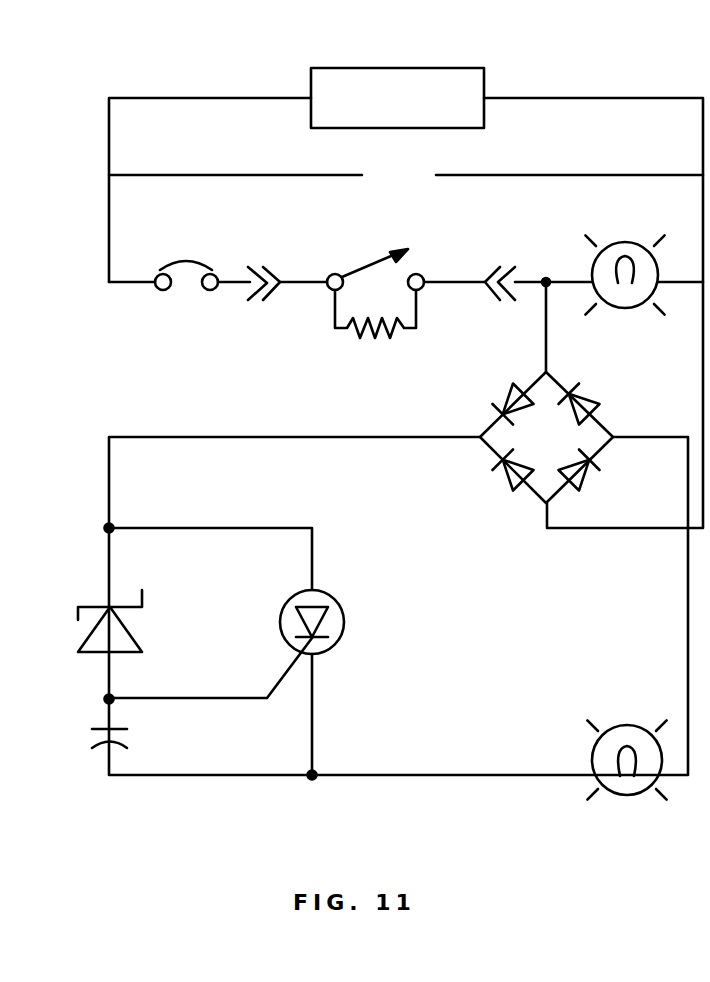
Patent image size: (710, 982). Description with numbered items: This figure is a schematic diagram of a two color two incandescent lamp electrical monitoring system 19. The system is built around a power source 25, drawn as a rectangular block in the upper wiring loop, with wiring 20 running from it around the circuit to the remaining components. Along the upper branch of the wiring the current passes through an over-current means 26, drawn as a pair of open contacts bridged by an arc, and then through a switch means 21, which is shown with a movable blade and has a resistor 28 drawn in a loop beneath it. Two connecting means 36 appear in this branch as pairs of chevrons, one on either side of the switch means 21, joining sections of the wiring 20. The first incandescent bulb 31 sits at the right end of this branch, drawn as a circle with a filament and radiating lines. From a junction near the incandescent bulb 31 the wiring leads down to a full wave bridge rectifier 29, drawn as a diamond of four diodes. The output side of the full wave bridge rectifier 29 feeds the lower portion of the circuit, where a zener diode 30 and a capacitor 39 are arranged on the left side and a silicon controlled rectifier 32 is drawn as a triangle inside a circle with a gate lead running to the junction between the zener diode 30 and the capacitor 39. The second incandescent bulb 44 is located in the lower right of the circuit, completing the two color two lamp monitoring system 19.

The two color two incandescent lamp electrical monitoring system 19 is at (540, 98).
The wiring 20 is at (406, 175).
The switch means 21 is at (365, 258).
The power source 25 is at (333, 78).
The over-current means 26 is at (187, 258).
The resistor 28 is at (385, 333).
The full wave bridge rectifier 29 is at (585, 395).
The zener diode 30 is at (132, 633).
The incandescent bulb 31 is at (622, 240).
The silicon controlled rectifier 32 is at (344, 625).
The connecting means 36 is at (263, 295).
The capacitor 39 is at (127, 740).
The incandescent bulb 44 is at (592, 745).